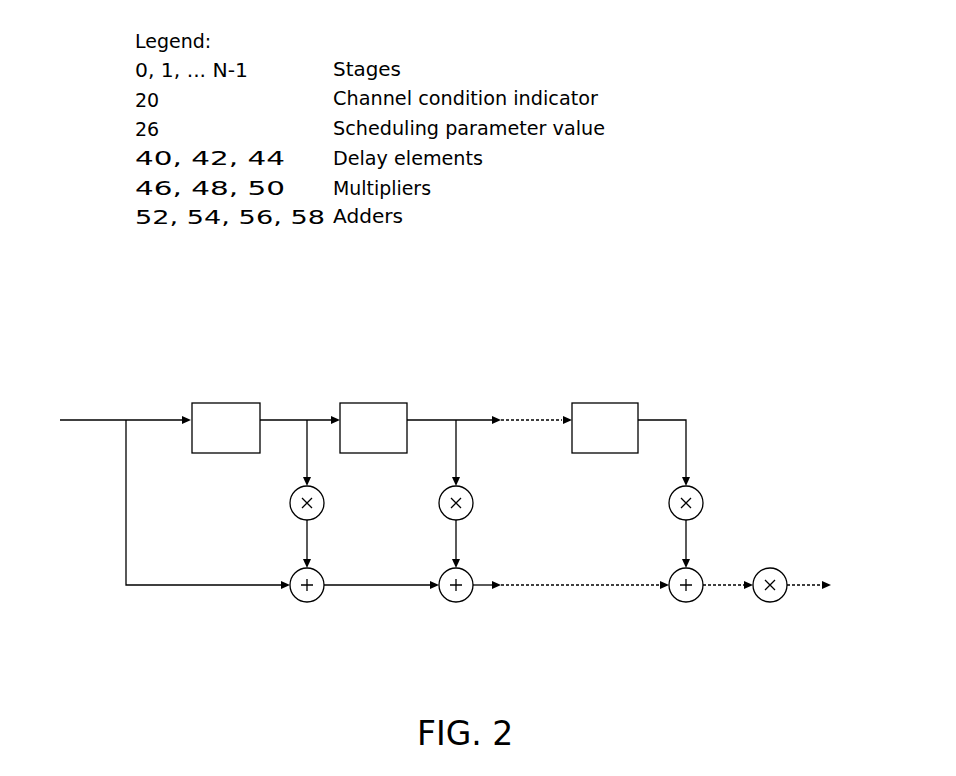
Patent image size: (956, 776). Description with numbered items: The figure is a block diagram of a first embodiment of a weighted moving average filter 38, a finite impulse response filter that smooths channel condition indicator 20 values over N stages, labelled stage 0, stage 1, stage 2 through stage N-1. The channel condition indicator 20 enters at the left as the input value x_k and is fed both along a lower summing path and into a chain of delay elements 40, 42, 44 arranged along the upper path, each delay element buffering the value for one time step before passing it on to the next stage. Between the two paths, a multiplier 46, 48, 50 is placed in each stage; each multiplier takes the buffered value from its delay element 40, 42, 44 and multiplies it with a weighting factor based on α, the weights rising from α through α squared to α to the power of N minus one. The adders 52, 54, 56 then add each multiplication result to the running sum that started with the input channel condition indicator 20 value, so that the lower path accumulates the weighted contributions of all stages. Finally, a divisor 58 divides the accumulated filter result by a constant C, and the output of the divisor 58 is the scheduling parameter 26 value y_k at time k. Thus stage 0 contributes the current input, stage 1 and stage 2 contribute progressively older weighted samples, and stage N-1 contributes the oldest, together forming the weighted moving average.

The channel condition indicator 20 is at (93, 420).
The scheduling parameter 26 is at (803, 583).
The weighted moving average filter 38 is at (737, 403).
The delay element 40 is at (230, 403).
The delay element 42 is at (377, 403).
The delay element 44 is at (610, 403).
The multiplier 46 is at (321, 495).
The multiplier 48 is at (470, 495).
The multiplier 50 is at (700, 495).
The adder 52 is at (320, 573).
The adder 54 is at (469, 573).
The adder 56 is at (699, 573).
The divisor 58 is at (776, 568).
The stage 0 is at (123, 603).
The stage 1 is at (222, 603).
The stage 2 is at (387, 603).
The stage N-1 is at (617, 603).